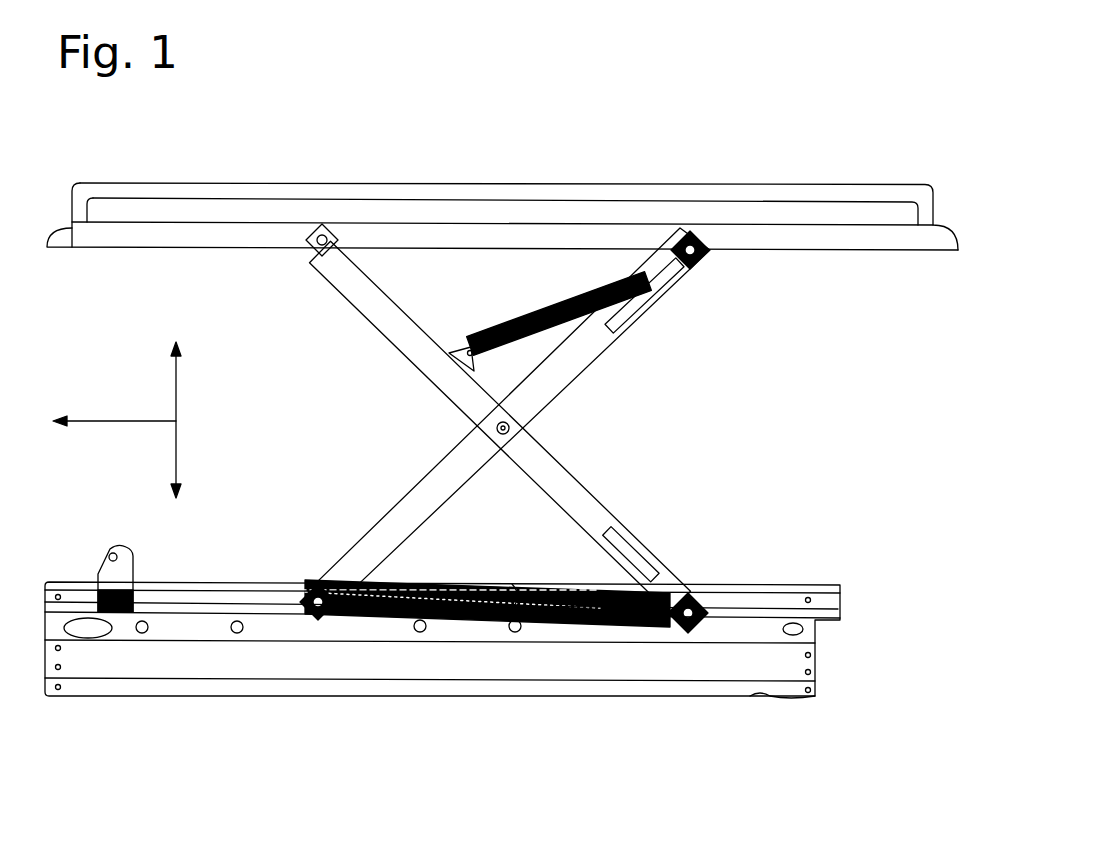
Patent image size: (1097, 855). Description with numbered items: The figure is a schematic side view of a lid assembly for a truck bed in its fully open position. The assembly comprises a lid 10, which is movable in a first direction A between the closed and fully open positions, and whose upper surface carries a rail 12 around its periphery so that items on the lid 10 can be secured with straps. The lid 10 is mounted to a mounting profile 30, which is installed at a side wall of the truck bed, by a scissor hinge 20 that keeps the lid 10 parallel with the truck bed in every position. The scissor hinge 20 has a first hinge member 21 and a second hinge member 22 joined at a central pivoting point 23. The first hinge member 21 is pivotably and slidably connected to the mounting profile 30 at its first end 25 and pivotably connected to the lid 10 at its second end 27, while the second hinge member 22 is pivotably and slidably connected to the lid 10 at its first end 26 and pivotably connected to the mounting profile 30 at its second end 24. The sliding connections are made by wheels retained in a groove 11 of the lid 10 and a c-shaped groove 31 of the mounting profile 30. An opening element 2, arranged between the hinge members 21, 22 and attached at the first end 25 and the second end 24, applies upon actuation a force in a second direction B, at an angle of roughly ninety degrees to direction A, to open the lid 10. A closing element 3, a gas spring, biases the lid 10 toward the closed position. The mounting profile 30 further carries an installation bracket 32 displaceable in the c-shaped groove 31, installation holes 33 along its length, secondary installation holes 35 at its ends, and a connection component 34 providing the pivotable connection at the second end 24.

The lid 10 is at (438, 158).
The groove 11 is at (204, 247).
The rail 12 is at (498, 190).
The opening element 2 is at (568, 622).
The closing element 3 is at (548, 318).
The scissor hinge 20 is at (418, 420).
The first hinge member 21 is at (418, 528).
The second hinge member 22 is at (383, 313).
The central pivoting point 23 is at (503, 436).
The second end of the second hinge member 24 is at (690, 632).
The first end of the first hinge member 25 is at (310, 606).
The first end of the second hinge member 26 is at (312, 236).
The second end of the first hinge member 27 is at (690, 243).
The mounting profile 30 is at (392, 712).
The c-shaped groove 31 is at (235, 600).
The installation bracket 32 is at (117, 600).
The installation holes 33 is at (420, 632).
The connection component 34 is at (812, 688).
The secondary installation holes 35 is at (810, 653).